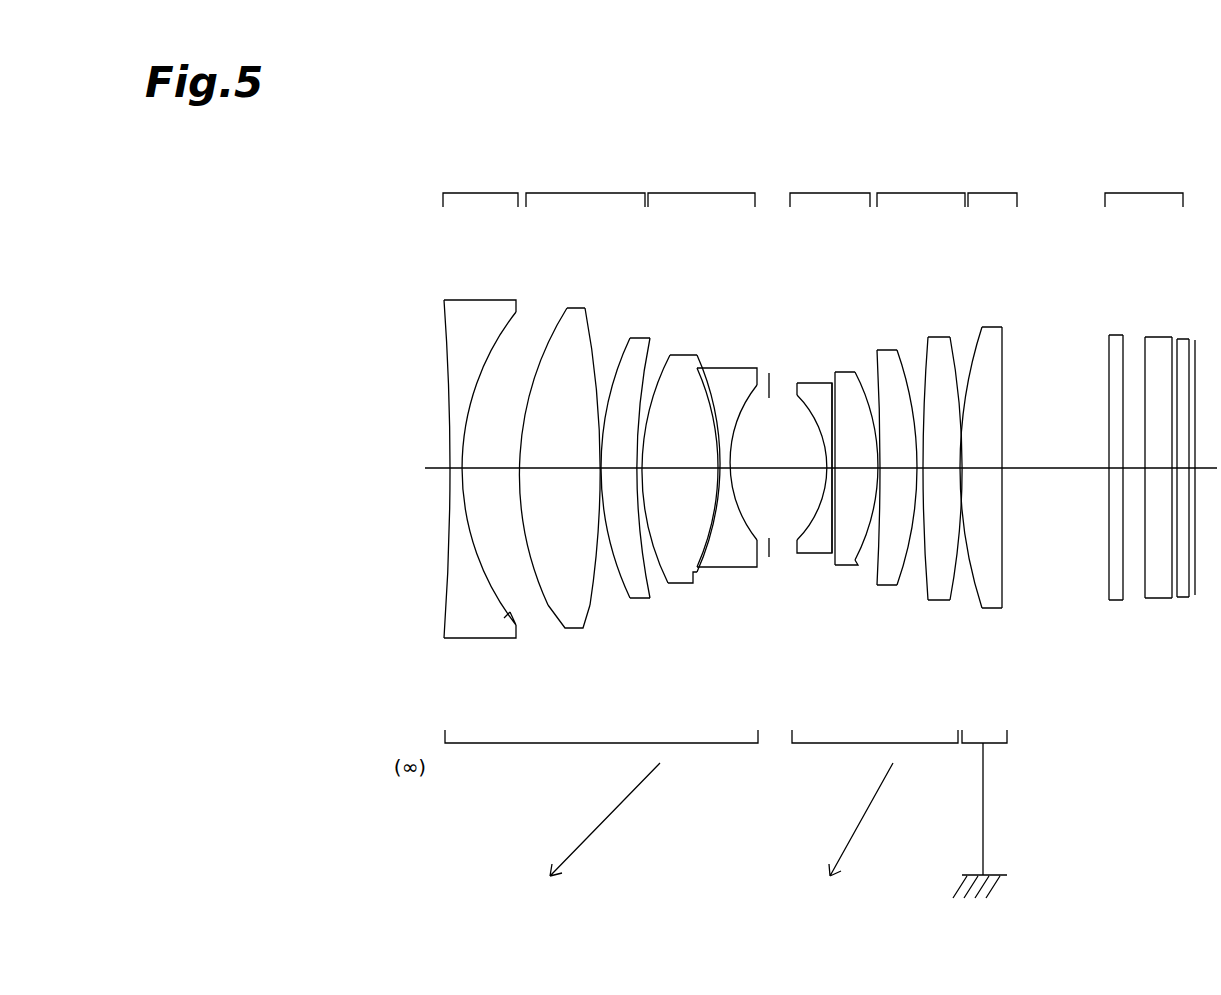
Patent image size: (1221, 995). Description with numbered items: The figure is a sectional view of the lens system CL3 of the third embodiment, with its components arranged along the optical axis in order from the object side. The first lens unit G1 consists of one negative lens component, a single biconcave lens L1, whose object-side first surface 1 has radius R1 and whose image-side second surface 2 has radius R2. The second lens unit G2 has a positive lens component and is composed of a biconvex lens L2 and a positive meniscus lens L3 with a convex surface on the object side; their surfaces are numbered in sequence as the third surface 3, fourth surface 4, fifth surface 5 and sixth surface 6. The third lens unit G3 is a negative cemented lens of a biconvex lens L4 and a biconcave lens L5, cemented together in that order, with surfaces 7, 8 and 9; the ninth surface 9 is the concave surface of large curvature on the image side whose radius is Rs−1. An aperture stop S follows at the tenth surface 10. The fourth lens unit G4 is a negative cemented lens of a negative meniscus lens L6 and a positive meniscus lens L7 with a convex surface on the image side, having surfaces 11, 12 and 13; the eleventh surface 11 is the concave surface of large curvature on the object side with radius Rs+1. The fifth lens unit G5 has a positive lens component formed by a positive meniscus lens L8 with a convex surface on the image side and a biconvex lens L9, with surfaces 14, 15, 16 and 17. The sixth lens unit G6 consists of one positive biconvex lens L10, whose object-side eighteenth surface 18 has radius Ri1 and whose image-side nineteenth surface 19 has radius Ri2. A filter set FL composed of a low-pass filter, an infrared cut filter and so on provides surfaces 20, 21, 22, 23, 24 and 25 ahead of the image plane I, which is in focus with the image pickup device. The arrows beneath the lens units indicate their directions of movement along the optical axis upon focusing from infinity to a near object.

The first surface 1 is at (444, 638).
The second surface 2 is at (506, 639).
The third surface 3 is at (546, 604).
The fourth surface 4 is at (590, 605).
The fifth surface 5 is at (630, 598).
The sixth surface 6 is at (650, 598).
The seventh surface 7 is at (667, 583).
The eighth surface 8 is at (700, 578).
The ninth surface 9 is at (758, 570).
The tenth surface 10 is at (770, 560).
The eleventh surface 11 is at (800, 555).
The twelfth surface 12 is at (833, 556).
The thirteenth surface 13 is at (858, 566).
The fourteenth surface 14 is at (879, 586).
The fifteenth surface 15 is at (899, 586).
The sixteenth surface 16 is at (928, 600).
The seventeenth surface 17 is at (950, 600).
The eighteenth surface 18 is at (982, 608).
The nineteenth surface 19 is at (1002, 608).
The twentieth surface 20 is at (1109, 600).
The twenty-first surface 21 is at (1123, 600).
The twenty-second surface 22 is at (1145, 598).
The twenty-third surface 23 is at (1172, 598).
The twenty-fourth surface 24 is at (1177, 597).
The twenty-fifth surface 25 is at (1189, 597).
The biconcave lens L1 is at (469, 463).
The biconvex lens L2 is at (559, 447).
The positive meniscus lens L3 is at (631, 447).
The biconvex lens L4 is at (681, 485).
The biconcave lens L5 is at (727, 485).
The negative meniscus lens L6 is at (819, 485).
The positive meniscus lens L7 is at (856, 485).
The positive meniscus lens L8 is at (903, 447).
The biconvex lens L9 is at (953, 447).
The biconvex lens L10 is at (998, 447).
The aperture stop S is at (773, 500).
The image plane I is at (1195, 345).
The first lens unit G1 is at (480, 188).
The second lens unit G2 is at (585, 188).
The third lens unit G3 is at (701, 188).
The fourth lens unit G4 is at (830, 188).
The fifth lens unit G5 is at (921, 188).
The sixth lens unit G6 is at (1000, 188).
The filter set FL is at (1149, 438).
The lens system CL3 is at (1010, 120).